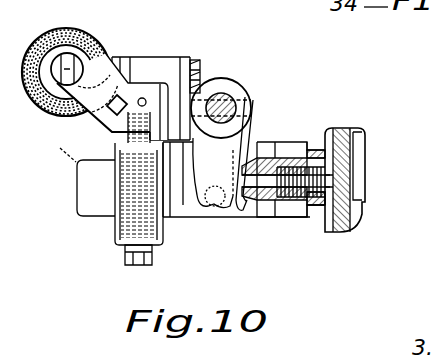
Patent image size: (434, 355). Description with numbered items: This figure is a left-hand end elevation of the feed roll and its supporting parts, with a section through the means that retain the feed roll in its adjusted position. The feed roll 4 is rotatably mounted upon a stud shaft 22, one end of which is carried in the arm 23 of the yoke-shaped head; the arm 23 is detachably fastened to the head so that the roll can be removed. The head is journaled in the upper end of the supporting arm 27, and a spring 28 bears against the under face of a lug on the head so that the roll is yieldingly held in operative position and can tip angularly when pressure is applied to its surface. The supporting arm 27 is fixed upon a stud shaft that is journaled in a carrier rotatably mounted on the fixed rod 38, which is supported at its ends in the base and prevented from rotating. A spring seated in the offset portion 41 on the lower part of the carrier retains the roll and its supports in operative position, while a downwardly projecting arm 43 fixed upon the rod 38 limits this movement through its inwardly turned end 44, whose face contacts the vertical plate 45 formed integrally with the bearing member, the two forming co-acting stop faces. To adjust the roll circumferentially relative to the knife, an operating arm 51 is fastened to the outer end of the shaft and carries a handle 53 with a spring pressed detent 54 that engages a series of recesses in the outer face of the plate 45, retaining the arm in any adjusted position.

The feed roll 4 is at (90, 15).
The stud shaft 22 is at (67, 73).
The arm 23 is at (103, 58).
The supporting arm 27 is at (176, 100).
The spring 28 is at (116, 138).
The fixed rod 38 is at (222, 99).
The offset portion 41 is at (98, 201).
The downwardly projecting arm 43 is at (226, 146).
The inwardly turned end 44 is at (207, 208).
The vertical plate 45 is at (242, 210).
The operating arm 51 is at (289, 214).
The handle 53 is at (360, 133).
The spring pressed detent 54 is at (330, 127).